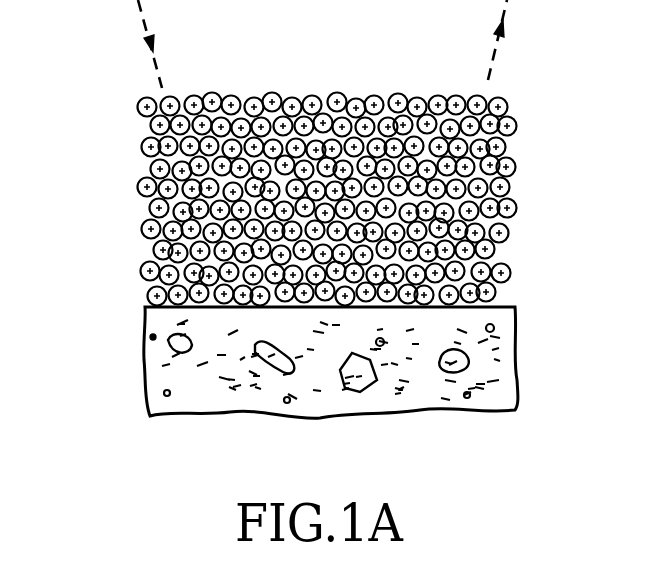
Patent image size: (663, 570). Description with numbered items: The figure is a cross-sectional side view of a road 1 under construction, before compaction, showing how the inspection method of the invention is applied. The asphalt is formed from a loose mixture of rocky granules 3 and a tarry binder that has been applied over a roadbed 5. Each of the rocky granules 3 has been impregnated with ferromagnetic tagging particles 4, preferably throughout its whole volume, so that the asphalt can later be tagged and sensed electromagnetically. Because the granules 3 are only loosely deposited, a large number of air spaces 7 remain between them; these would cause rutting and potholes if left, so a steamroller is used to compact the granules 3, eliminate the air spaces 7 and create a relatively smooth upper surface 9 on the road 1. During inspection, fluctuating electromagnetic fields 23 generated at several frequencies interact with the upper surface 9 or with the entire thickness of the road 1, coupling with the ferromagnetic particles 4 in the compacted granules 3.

The road 1 is at (100, 126).
The rocky granules 3 is at (141, 235).
The ferromagnetic tagging particles 4 is at (365, 96).
The roadbed 5 is at (145, 355).
The air spaces 7 is at (291, 99).
The upper surface 9 is at (392, 86).
The fluctuating electromagnetic fields 23 is at (482, 98).